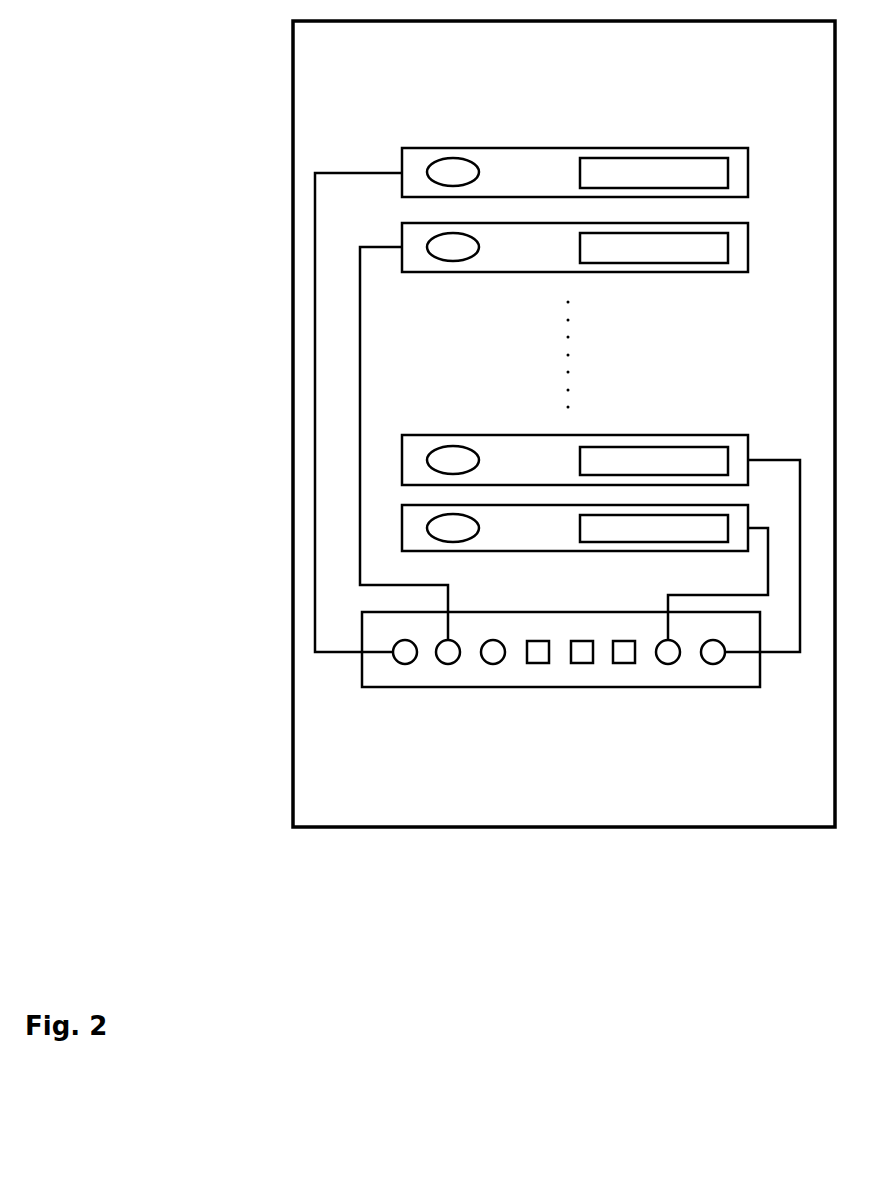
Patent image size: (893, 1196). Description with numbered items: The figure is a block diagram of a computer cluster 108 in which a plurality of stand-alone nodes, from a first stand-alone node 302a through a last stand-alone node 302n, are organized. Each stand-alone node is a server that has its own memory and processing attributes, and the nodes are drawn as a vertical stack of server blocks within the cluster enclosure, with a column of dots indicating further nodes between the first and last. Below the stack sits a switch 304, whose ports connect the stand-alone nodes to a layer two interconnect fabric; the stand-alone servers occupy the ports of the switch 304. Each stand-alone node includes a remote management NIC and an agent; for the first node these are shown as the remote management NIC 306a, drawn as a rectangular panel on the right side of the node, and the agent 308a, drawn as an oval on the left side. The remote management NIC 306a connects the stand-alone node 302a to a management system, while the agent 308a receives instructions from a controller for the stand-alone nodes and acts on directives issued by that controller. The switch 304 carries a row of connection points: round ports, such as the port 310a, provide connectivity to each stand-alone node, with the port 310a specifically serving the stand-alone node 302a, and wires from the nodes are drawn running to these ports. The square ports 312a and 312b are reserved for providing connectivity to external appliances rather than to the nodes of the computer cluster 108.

The computer cluster 108 is at (240, 846).
The stand-alone node 302a is at (555, 141).
The stand-alone node 302n is at (577, 552).
The switch 304 is at (532, 691).
The remote management NIC 306a is at (657, 158).
The agent 308a is at (453, 158).
The port 310a is at (405, 664).
The port 312a is at (624, 664).
The port 312b is at (582, 664).